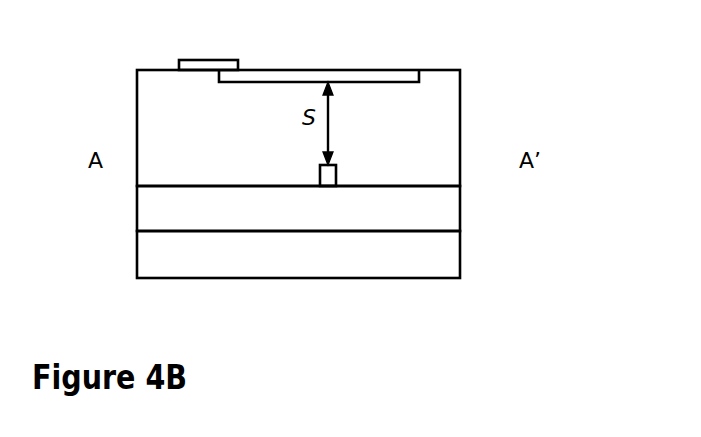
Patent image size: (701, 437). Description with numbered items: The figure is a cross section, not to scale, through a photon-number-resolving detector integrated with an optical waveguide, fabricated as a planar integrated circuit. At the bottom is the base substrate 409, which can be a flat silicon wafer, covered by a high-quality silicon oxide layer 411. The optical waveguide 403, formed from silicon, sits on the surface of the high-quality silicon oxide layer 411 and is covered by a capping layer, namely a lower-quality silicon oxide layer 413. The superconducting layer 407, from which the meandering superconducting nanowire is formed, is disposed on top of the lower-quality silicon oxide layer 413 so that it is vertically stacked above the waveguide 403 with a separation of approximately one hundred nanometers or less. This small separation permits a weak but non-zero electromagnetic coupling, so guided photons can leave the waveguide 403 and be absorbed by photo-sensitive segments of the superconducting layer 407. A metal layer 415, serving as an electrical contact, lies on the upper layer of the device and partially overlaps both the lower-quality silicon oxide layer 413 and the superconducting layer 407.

The optical waveguide 403 is at (320, 165).
The superconducting layer 407 is at (320, 78).
The substrate 409 is at (392, 265).
The high-quality silicon oxide layer 411 is at (392, 219).
The lower-quality silicon oxide layer 413 is at (392, 140).
The metal layer 415 is at (198, 65).